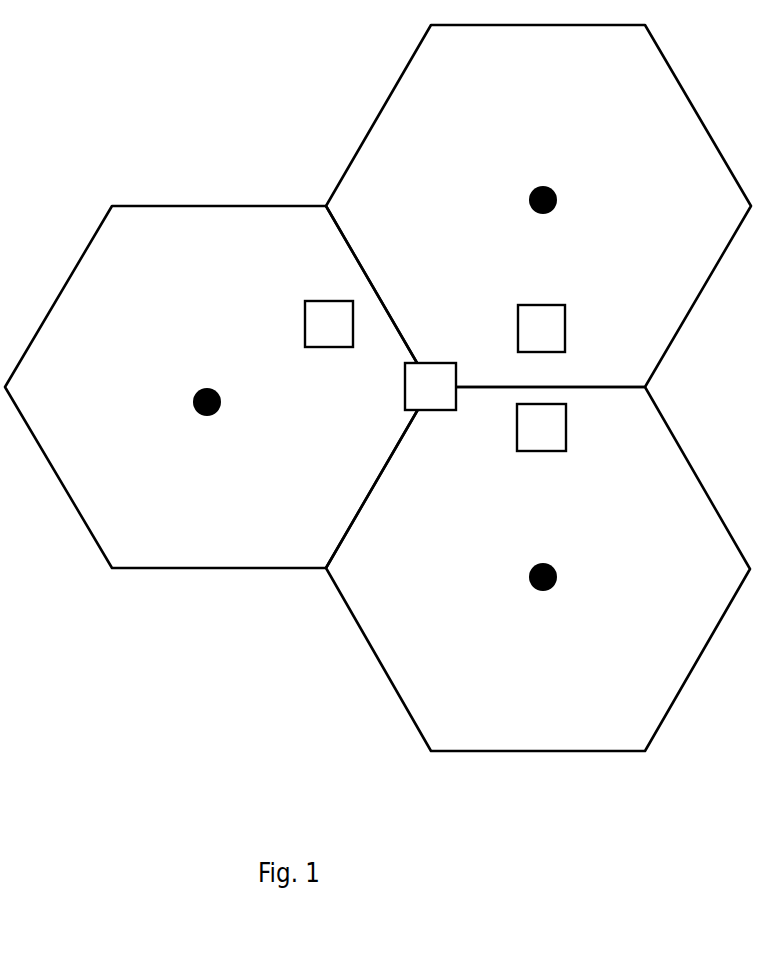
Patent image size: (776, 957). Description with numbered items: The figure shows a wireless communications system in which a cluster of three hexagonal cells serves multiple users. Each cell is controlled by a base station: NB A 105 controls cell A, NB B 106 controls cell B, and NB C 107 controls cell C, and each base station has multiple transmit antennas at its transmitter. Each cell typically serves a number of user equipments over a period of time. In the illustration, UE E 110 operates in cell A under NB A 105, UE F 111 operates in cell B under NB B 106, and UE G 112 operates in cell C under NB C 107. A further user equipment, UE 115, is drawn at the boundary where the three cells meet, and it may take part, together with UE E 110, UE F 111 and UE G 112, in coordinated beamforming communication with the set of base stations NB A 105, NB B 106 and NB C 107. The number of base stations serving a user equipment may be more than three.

The NB A 105 is at (199, 390).
The NB B 106 is at (535, 189).
The NB C 107 is at (535, 566).
The UE E 110 is at (305, 325).
The UE F 111 is at (567, 315).
The UE G 112 is at (530, 451).
The UE 115 is at (443, 362).